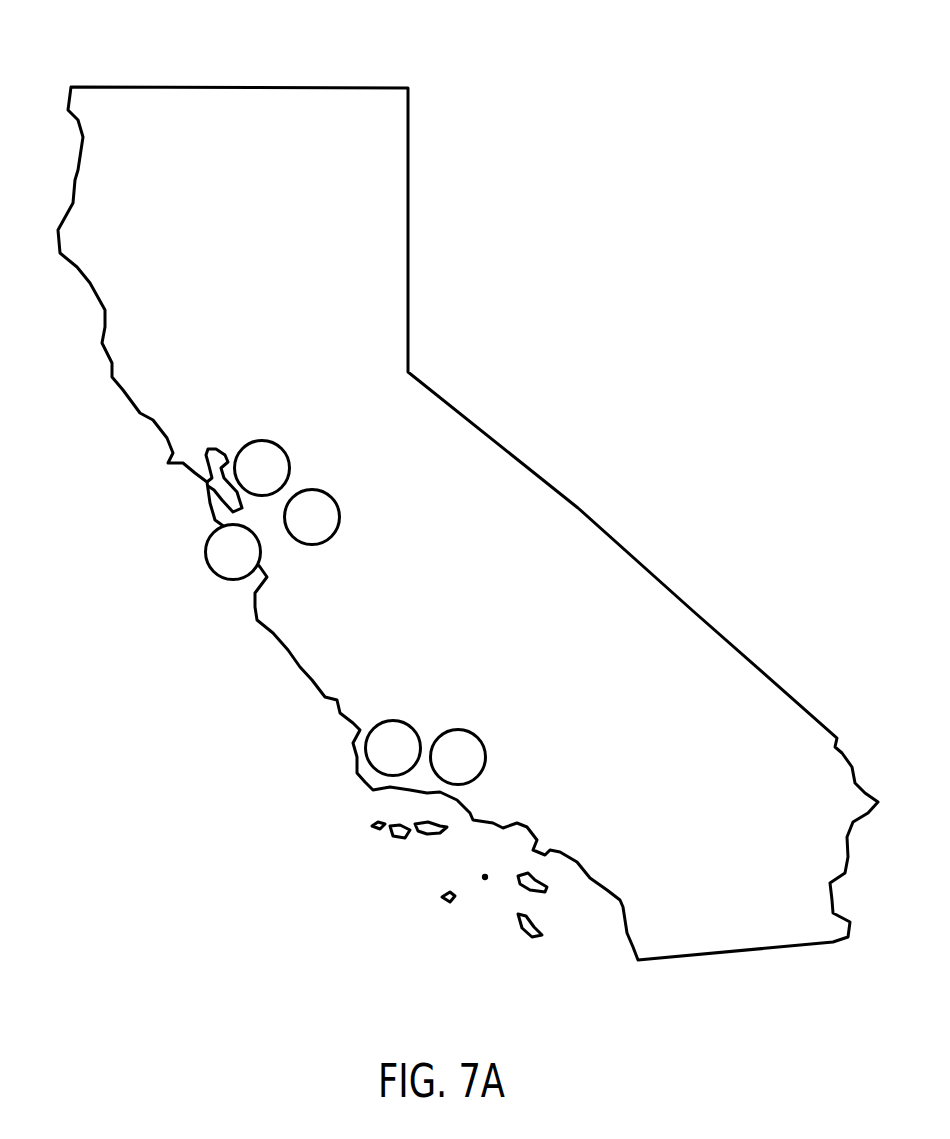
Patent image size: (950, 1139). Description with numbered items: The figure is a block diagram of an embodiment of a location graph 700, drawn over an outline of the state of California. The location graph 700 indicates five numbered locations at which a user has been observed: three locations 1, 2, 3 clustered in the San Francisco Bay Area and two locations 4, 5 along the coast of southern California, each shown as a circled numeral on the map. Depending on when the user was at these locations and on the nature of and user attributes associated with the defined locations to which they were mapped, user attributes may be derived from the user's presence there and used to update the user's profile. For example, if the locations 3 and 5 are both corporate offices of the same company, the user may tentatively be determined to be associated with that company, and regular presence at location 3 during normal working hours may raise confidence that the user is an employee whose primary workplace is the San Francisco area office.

The location graph 700 is at (100, 30).
The location 1 is at (262, 468).
The location 2 is at (312, 517).
The location 3 is at (233, 552).
The location 4 is at (393, 748).
The location 5 is at (458, 757).